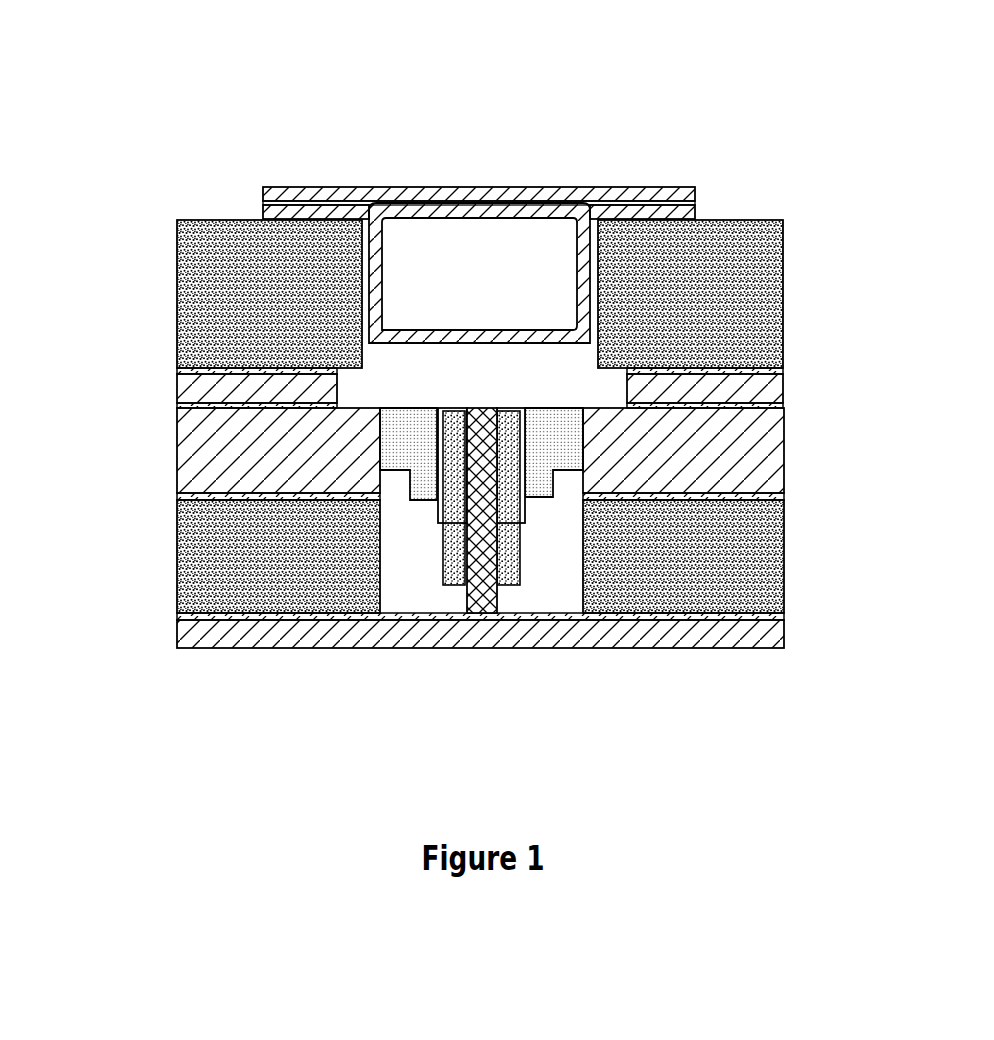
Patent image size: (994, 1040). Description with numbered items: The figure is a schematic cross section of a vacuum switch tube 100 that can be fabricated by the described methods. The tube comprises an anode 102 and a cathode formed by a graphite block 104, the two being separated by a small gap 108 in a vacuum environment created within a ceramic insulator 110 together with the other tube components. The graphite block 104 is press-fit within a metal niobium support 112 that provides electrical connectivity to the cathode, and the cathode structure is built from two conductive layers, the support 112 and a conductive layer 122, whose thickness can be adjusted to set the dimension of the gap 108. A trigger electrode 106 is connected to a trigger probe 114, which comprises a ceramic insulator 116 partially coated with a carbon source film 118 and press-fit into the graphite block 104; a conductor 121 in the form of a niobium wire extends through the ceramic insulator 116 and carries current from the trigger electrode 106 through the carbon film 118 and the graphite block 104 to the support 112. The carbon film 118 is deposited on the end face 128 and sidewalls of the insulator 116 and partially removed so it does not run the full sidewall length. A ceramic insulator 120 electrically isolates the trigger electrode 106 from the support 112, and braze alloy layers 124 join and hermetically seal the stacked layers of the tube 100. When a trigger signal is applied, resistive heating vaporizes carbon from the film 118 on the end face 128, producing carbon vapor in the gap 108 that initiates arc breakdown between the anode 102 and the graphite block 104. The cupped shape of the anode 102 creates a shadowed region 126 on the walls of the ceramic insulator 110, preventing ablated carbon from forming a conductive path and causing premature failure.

The vacuum switch tube 100 is at (478, 70).
The anode 102 is at (533, 321).
The graphite block 104 is at (393, 452).
The trigger electrode 106 is at (792, 622).
The gap 108 is at (402, 345).
The ceramic insulator 110 is at (245, 306).
The support 112 is at (246, 468).
The trigger probe 114 is at (542, 578).
The ceramic insulator 116 is at (453, 541).
The carbon source film 118 is at (426, 515).
The ceramic insulator 120 is at (261, 572).
The conductor 121 is at (478, 569).
The conductive layer 122 is at (790, 372).
The braze alloy layers 124 is at (251, 216).
The shadowed region 126 is at (602, 285).
The end face 128 is at (508, 382).